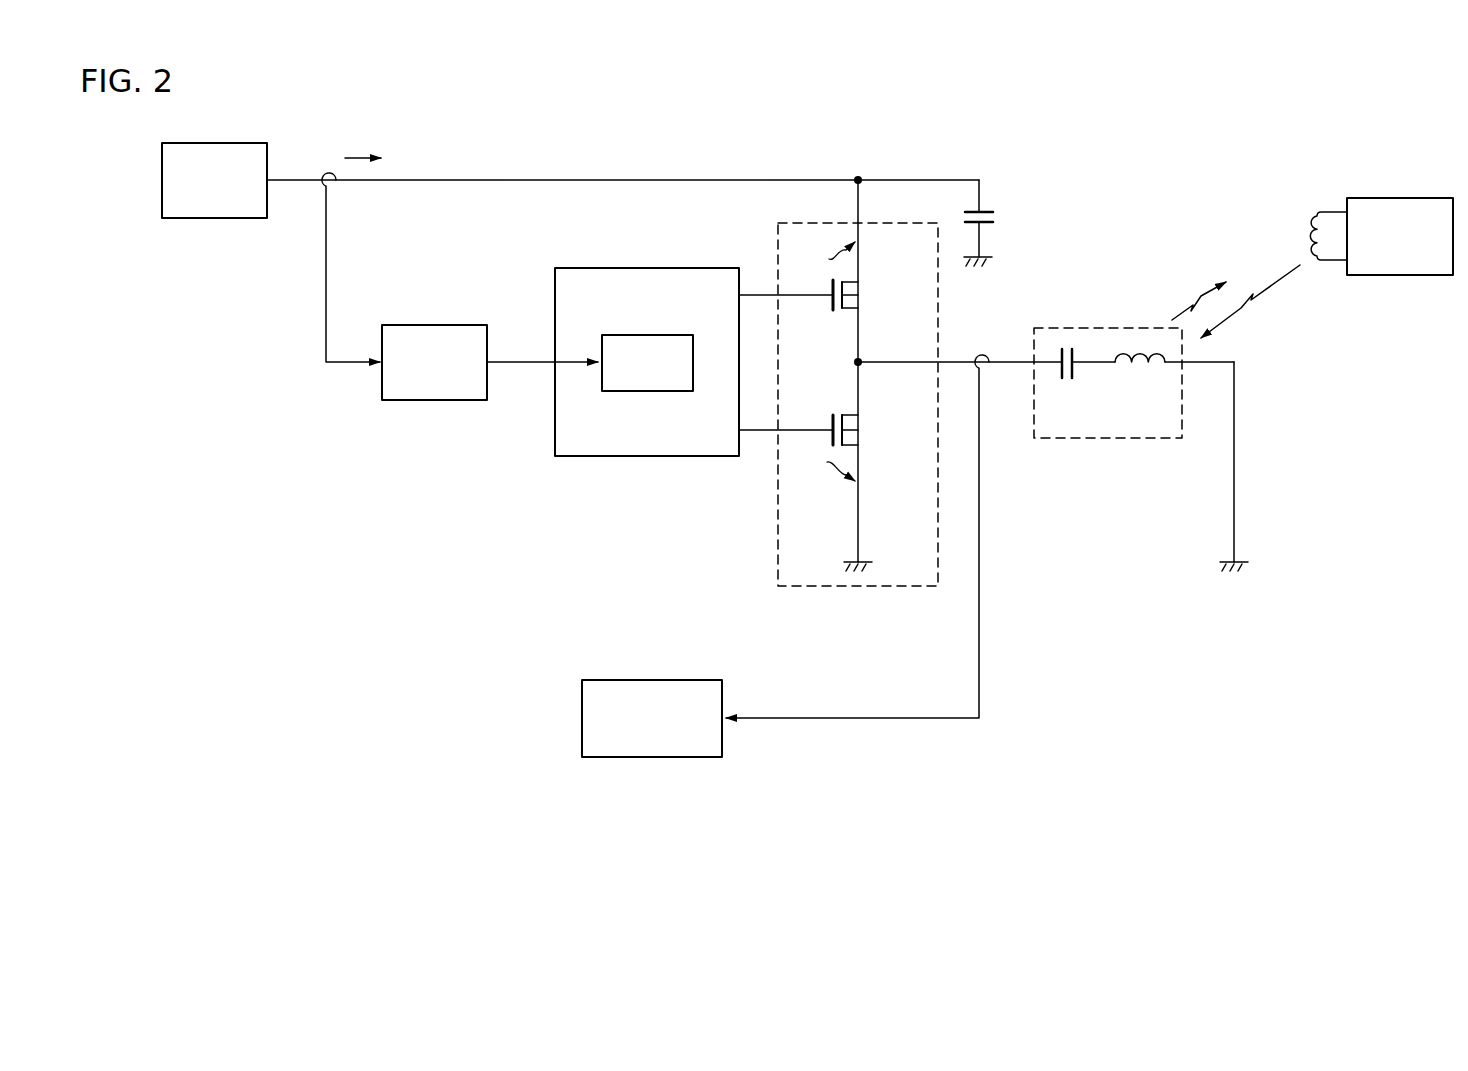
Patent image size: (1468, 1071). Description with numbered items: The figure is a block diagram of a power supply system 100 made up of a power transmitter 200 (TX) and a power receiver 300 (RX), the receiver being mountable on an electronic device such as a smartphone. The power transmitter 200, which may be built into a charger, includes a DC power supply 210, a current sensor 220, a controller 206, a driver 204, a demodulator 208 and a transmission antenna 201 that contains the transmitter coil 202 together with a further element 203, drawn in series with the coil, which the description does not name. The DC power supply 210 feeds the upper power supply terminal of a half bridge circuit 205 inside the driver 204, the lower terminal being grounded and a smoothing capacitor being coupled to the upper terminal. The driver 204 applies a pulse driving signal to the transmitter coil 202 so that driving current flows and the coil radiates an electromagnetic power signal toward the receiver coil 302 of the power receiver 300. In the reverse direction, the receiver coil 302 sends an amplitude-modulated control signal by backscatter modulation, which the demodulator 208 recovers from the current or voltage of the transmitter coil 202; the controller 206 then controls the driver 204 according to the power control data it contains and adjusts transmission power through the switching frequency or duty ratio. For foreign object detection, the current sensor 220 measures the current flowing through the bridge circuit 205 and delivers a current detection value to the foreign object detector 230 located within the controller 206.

The power supply system 100 is at (825, 964).
The power transmitter 200 is at (1263, 833).
The transmission antenna 201 is at (1072, 328).
The transmitter coil 202 is at (1146, 372).
The resonance capacitor 203 is at (1067, 378).
The driver 204 is at (830, 588).
The half bridge circuit 205 is at (887, 503).
The controller 206 is at (660, 268).
The demodulator 208 is at (638, 757).
The DC power supply 210 is at (203, 143).
The current sensor 220 is at (432, 400).
The foreign object detector 230 is at (648, 391).
The power receiver 300 is at (1400, 198).
The receiver coil 302 is at (1311, 228).